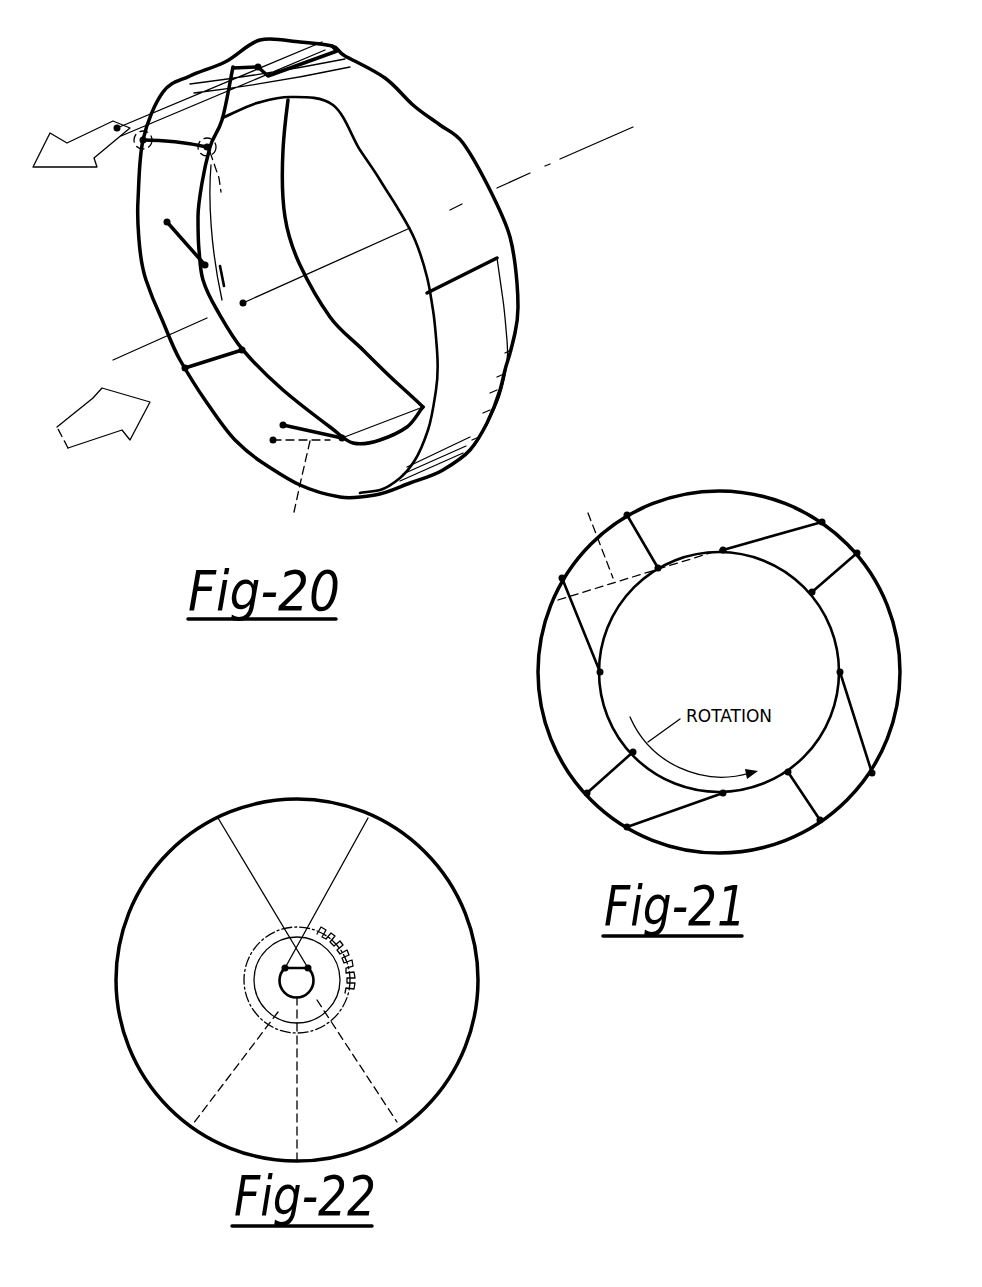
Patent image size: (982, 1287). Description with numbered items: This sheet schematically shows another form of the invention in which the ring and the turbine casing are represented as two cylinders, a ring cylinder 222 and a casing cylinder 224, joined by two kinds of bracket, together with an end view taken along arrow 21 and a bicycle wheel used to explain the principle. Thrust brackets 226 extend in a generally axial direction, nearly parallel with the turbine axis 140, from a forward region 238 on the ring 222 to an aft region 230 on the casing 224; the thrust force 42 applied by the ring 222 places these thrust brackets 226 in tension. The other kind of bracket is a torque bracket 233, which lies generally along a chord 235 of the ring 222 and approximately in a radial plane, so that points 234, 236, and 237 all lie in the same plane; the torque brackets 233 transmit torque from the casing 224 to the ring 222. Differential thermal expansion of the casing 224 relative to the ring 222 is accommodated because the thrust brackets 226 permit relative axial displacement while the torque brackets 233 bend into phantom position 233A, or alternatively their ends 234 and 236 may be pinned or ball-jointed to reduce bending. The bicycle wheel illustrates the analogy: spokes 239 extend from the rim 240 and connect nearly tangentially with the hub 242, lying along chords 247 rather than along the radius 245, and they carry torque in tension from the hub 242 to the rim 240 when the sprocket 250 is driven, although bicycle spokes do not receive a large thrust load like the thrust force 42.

In FIG. 20, the arrow 21 is at (90, 440).
In FIG. 20, the thrust force 42 is at (67, 140).
In FIG. 20, the turbine axis 140 is at (585, 150).
In FIG. 20, the cylinder 222 is at (330, 40).
In FIG. 21, the cylinder 222 is at (723, 492).
In FIG. 20, the cylinder 224 is at (447, 143).
In FIG. 21, the cylinder 224 is at (785, 572).
In FIG. 20, the thrust bracket 226 is at (183, 141).
In FIG. 21, the thrust bracket 226 is at (627, 514).
In FIG. 20, the aft region 230 is at (233, 179).
In FIG. 20, the torque bracket 233 is at (187, 248).
In FIG. 21, the torque bracket 233 is at (582, 632).
In FIG. 20, the phantom position 233A is at (314, 487).
In FIG. 20, the point 234 is at (167, 222).
In FIG. 21, the chord 235 is at (630, 552).
In FIG. 20, the point 236 is at (203, 266).
In FIG. 20, the point 237 is at (243, 303).
In FIG. 20, the forward region 238 is at (142, 130).
In FIG. 22, the spoke 239 is at (353, 845).
In FIG. 22, the rim 240 is at (425, 852).
In FIG. 22, the hub 242 is at (292, 995).
In FIG. 22, the radius 245 is at (300, 1083).
In FIG. 22, the chord 247 is at (229, 1060).
In FIG. 22, the sprocket 250 is at (318, 933).